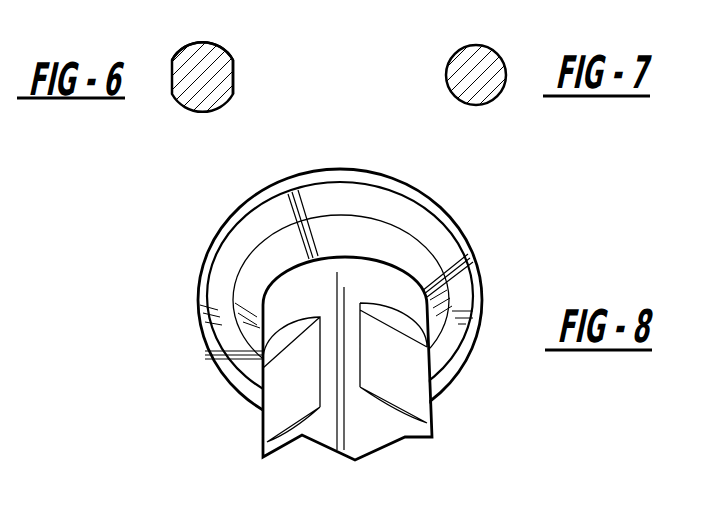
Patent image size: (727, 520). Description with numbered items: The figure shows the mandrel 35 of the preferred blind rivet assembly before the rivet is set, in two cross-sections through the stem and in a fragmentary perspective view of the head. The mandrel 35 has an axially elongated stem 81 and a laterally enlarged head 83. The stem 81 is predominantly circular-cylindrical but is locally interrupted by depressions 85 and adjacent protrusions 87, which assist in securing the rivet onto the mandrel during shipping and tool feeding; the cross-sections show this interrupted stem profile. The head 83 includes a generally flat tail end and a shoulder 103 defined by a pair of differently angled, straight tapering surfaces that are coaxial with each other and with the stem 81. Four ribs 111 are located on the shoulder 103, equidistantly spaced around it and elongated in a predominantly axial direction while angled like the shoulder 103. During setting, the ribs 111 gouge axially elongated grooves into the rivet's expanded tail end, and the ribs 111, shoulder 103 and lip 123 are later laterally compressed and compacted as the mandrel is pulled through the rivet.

In FIG. 8, the mandrel 35 is at (532, 255).
In FIG. 6, the stem 81 is at (202, 75).
In FIG. 7, the stem 81 is at (478, 70).
In FIG. 8, the stem 81 is at (383, 420).
In FIG. 8, the head 83 is at (361, 173).
In FIG. 6, the depressions 85 is at (235, 78).
In FIG. 6, the protrusions 87 is at (197, 42).
In FIG. 8, the shoulder 103 is at (413, 217).
In FIG. 8, the ribs 111 is at (283, 210).
In FIG. 8, the lip 123 is at (208, 262).